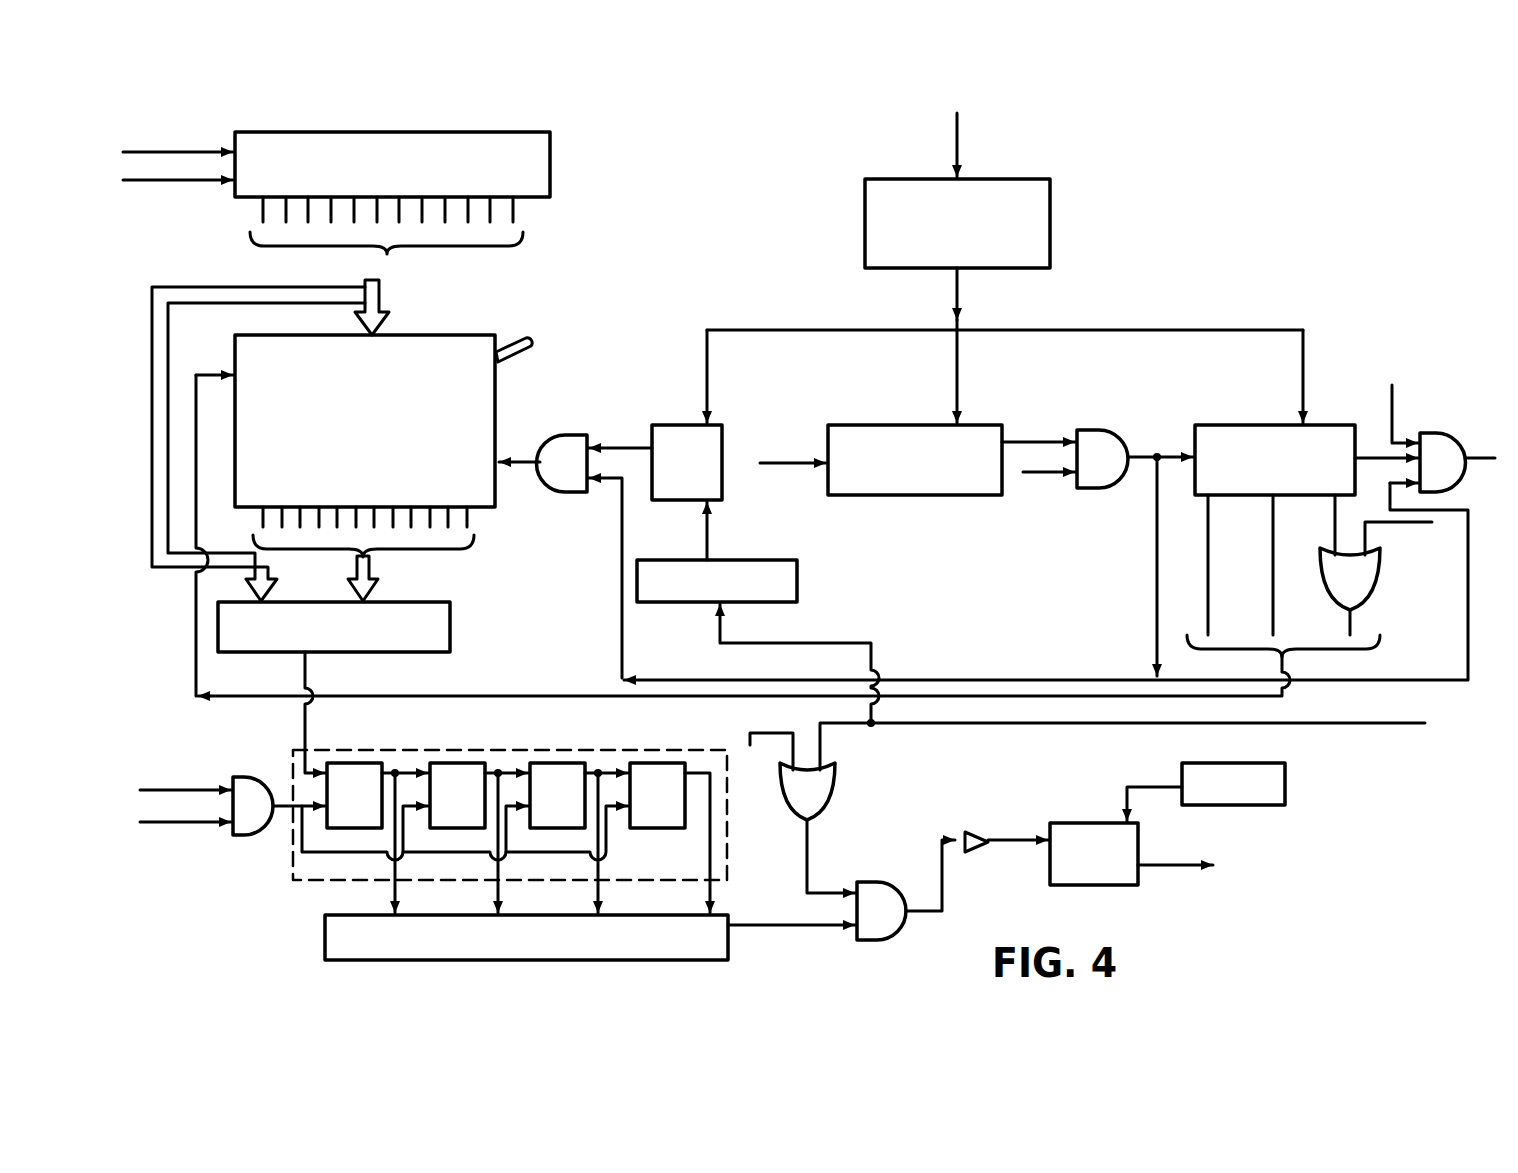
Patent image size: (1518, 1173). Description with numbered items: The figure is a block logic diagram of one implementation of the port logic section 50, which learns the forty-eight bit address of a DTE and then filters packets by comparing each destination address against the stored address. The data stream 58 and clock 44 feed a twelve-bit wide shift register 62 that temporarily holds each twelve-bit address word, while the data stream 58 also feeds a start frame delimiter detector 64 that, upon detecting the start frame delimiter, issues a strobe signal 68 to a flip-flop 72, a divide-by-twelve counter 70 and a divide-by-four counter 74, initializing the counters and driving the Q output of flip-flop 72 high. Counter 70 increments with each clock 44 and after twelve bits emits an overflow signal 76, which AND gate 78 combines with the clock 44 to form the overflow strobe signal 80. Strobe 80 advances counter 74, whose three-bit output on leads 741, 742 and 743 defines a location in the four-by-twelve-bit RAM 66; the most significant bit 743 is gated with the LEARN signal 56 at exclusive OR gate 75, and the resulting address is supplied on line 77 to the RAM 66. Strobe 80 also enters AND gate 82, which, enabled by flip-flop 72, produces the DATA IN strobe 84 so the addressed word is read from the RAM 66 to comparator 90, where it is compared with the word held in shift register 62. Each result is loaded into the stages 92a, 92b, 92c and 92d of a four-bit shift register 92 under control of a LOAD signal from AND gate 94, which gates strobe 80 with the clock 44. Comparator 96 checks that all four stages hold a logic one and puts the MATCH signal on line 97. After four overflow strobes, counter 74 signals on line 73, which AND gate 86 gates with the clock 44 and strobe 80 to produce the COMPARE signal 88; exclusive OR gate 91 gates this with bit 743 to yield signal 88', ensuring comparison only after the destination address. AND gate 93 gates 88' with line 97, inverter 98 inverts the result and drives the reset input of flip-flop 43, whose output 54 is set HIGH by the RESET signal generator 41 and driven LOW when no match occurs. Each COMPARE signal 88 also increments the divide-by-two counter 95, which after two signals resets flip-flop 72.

The RESET signal generator 41 is at (1237, 777).
The flip-flop 43 is at (1133, 853).
The clock signal 44 is at (200, 185).
The logic section 50 is at (1225, 217).
The output of flip-flop 54 is at (1160, 868).
The LEARN signal 56 is at (516, 340).
The data stream 58 is at (198, 153).
The 12-bit wide shift register 62 is at (432, 193).
The start frame delimiter detector 64 is at (1000, 219).
The 4x12-bit RAM 66 is at (323, 480).
The strobe signal 68 is at (957, 298).
The divide-by-12 counter 70 is at (915, 478).
The flip-flop 72 is at (706, 492).
The output line of divide-by-4 counter 73 is at (1370, 455).
The divide-by-4 counter 74 is at (1275, 427).
The counter output lead 741 is at (1210, 605).
The counter output lead 742 is at (1272, 549).
The counter output lead 743 is at (744, 776).
The exclusive OR gate 75 is at (1373, 595).
The overflow signal 76 is at (1010, 440).
The line 77 is at (1283, 686).
The AND gate 78 is at (1135, 425).
The overflow strobe signal 80 is at (1166, 462).
The AND gate 82 is at (595, 556).
The DATA IN strobe 84 is at (521, 466).
The AND gate 86 is at (1442, 432).
The COMPARE signal 88 is at (1122, 752).
The output signal of exclusive OR gate 88' is at (842, 856).
The comparator 90 is at (374, 687).
The exclusive OR gate 91 is at (839, 791).
The 4-bit shift register 92 is at (726, 762).
The first stage of shift register 92a is at (375, 812).
The second stage of shift register 92b is at (474, 809).
The third stage of shift register 92c is at (576, 811).
The fourth stage of shift register 92d is at (664, 808).
The AND gate 93 is at (914, 899).
The AND gate 94 is at (279, 778).
The divide-by-2 counter 95 is at (758, 643).
The comparator 96 is at (562, 947).
The MATCH signal line 97 is at (815, 928).
The inverter 98 is at (983, 830).